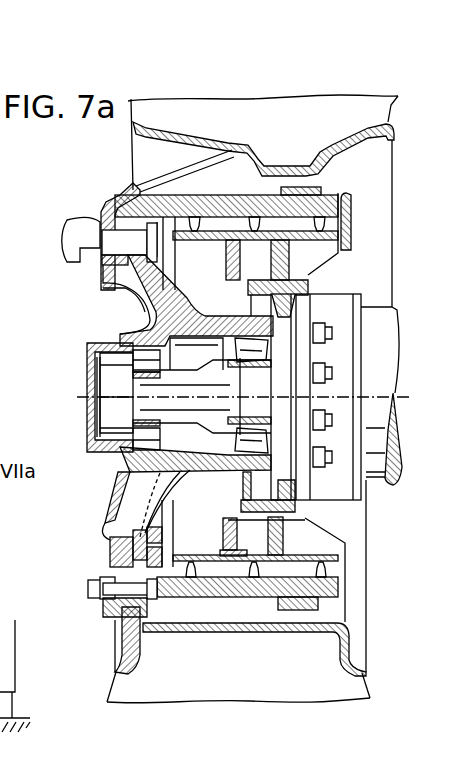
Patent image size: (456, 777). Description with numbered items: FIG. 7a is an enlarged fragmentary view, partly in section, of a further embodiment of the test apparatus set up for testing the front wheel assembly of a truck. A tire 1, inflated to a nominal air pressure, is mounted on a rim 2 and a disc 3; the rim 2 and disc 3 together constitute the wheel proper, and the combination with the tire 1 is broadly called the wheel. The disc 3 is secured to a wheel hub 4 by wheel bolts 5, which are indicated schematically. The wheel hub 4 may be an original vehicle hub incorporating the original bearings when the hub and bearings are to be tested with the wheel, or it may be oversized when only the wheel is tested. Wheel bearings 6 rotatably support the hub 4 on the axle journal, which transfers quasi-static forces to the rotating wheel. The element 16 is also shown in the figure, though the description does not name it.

The tire 1 is at (395, 110).
The rim 2 is at (183, 143).
The disc 3 is at (128, 187).
The wheel hub 4 is at (133, 295).
The wheel bolts 5 is at (72, 235).
The wheel bearings 6 is at (133, 358).
The brake drum flange 16 is at (346, 208).